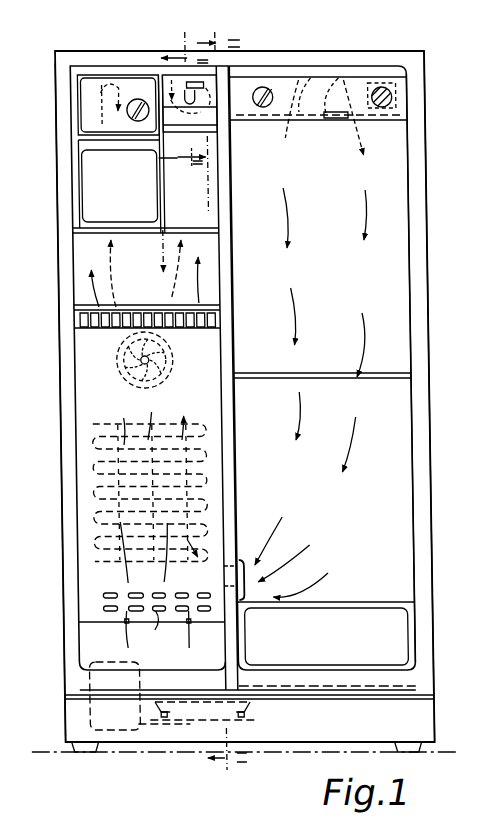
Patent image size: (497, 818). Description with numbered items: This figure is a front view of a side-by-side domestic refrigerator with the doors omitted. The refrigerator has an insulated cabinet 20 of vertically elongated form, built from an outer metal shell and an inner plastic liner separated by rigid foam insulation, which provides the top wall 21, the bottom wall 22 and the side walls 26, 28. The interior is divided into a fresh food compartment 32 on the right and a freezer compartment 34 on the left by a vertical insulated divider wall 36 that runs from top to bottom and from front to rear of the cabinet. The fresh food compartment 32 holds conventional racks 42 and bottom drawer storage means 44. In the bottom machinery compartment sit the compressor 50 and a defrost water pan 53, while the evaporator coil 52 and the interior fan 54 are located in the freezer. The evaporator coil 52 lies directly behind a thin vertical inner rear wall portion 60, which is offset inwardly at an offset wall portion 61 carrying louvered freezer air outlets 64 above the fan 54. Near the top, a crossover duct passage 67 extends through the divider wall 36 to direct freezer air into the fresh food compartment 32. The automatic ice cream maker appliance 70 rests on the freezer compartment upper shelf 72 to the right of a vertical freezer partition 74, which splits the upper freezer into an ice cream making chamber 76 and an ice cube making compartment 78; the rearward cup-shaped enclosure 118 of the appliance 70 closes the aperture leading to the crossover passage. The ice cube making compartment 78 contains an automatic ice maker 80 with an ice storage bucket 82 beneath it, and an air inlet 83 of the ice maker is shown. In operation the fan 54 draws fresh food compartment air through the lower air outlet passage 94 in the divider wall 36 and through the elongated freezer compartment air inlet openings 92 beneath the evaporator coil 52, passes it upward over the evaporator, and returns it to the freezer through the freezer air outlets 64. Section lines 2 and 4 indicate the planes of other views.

The section line 2- 2 is at (230, 395).
The section line 4- 4 is at (187, 43).
The insulated cabinet 20 is at (431, 89).
The top wall 21 is at (293, 60).
The bottom wall 22 is at (389, 678).
The side wall 26 is at (55, 351).
The side wall 28 is at (424, 287).
The fresh food compartment 32 is at (394, 255).
The freezer compartment 34 is at (97, 403).
The divider wall 36 is at (235, 288).
The racks 42 is at (386, 372).
The bottom drawer storage means 44 is at (342, 600).
The compressor 50 is at (80, 707).
The evaporator coil 52 is at (90, 490).
The defrost water pan 53 is at (265, 707).
The fan 54 is at (102, 368).
The inner rear wall portion 60 is at (207, 373).
The offset wall portion 61 is at (140, 303).
The freezer air outlets 64 is at (74, 322).
The crossover duct passage 67 is at (253, 64).
The automatic ice cream maker appliance 70 is at (168, 76).
The freezer compartment upper shelf 72 is at (213, 144).
The vertical freezer partition 74 is at (161, 205).
The ice cream making chamber 76 is at (261, 86).
The ice cube making compartment 78 is at (73, 190).
The automatic ice maker 80 is at (89, 112).
The ice storage bucket 82 is at (100, 173).
The air inlet 83 is at (137, 73).
The freezer compartment air inlet openings 92 is at (151, 620).
The lower air outlet passage 94 is at (240, 566).
The cup-shaped enclosure 118 is at (148, 161).